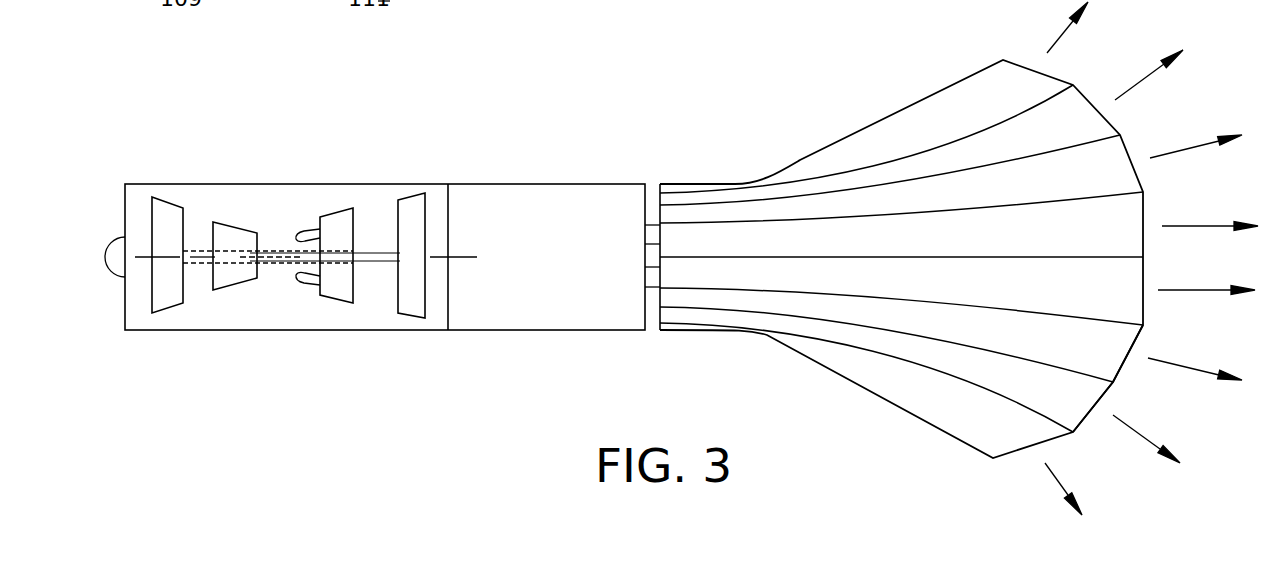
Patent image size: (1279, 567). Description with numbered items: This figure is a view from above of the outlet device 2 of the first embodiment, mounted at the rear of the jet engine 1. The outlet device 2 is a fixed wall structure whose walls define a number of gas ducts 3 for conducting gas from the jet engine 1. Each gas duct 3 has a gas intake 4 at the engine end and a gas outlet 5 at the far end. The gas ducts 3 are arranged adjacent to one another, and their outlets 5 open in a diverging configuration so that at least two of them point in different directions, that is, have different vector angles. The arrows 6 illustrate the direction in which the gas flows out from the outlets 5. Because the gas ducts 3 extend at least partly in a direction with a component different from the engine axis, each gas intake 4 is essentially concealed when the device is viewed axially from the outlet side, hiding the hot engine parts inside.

The jet engine 1 is at (363, 114).
The outlet device 2 is at (845, 56).
The gas ducts 3 is at (940, 323).
The gas intake 4 is at (660, 297).
The gas outlet 5 is at (1127, 366).
The arrows 6 is at (1180, 365).